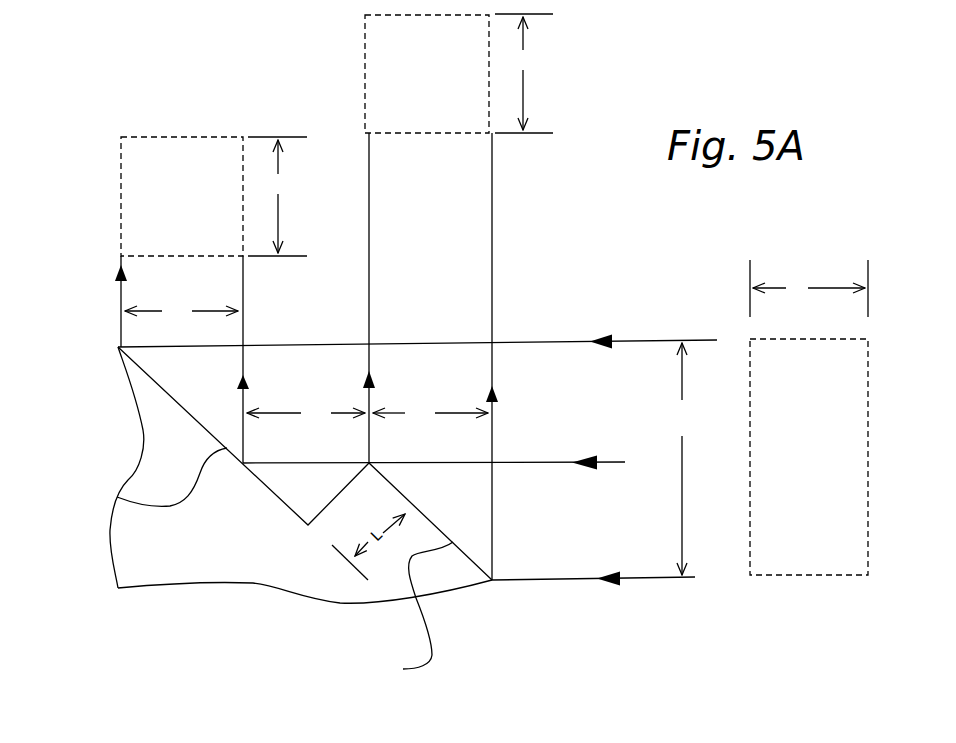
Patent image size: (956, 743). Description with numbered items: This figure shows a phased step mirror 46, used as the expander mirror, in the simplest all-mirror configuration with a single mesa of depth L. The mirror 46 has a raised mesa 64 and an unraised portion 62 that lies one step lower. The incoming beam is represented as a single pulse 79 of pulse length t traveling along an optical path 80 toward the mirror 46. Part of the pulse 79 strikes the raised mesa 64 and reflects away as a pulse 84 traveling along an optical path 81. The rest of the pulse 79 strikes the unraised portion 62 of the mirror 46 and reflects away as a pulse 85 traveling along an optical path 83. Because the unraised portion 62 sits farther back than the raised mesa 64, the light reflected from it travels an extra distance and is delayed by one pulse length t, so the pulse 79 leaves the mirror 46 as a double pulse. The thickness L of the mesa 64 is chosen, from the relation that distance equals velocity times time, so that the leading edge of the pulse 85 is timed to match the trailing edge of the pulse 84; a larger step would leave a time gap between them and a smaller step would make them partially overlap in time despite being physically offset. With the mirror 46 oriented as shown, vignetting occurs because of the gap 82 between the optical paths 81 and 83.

The mirror 46 is at (173, 562).
The unraised portion 62 is at (117, 497).
The raised mesa 64 is at (403, 669).
The single pulse 79 is at (825, 530).
The optical path 80 is at (682, 459).
The optical path 81 is at (430, 413).
The gap 82 is at (306, 413).
The optical path 83 is at (181, 311).
The pulse 84 is at (397, 84).
The pulse 85 is at (205, 220).